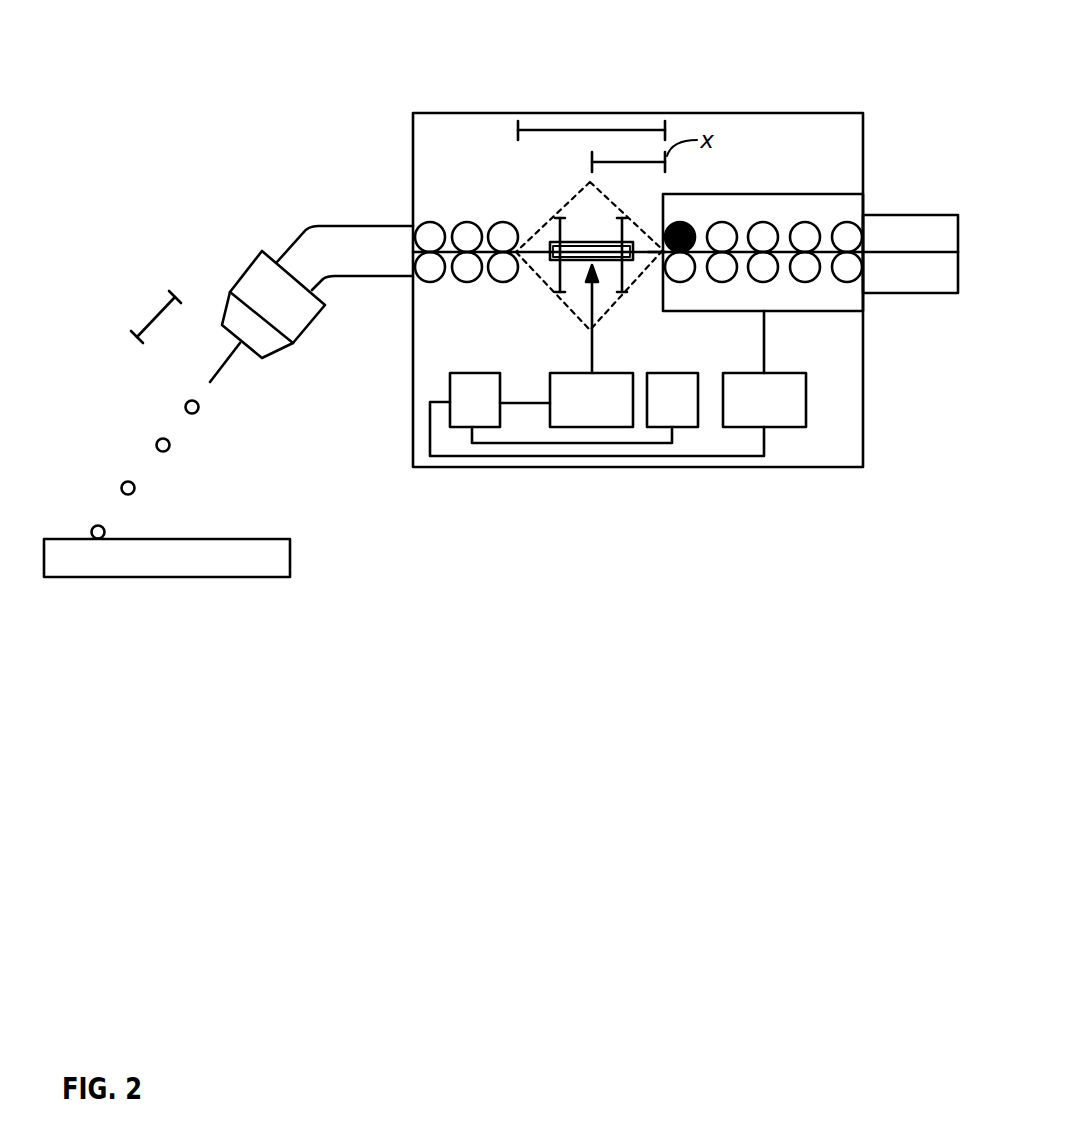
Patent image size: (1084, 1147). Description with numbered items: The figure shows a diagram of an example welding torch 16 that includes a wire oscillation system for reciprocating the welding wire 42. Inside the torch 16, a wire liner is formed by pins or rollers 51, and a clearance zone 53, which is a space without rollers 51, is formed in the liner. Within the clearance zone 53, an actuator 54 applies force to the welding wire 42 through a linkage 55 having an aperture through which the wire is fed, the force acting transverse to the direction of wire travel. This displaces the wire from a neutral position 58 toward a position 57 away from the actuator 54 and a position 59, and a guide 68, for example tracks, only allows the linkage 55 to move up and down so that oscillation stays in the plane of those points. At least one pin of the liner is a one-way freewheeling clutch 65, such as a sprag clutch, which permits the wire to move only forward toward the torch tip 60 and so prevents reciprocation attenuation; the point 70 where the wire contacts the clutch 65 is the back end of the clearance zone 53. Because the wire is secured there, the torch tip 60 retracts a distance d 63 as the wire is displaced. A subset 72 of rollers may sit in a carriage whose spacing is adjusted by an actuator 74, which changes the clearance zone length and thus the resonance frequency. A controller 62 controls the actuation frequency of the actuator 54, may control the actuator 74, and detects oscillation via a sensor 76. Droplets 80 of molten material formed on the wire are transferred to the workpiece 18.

The welding torch 16 is at (864, 112).
The workpiece 18 is at (290, 560).
The welding wire 42 is at (538, 250).
The rollers 51 is at (452, 222).
The clearance zone 53 is at (592, 128).
The actuator 54 is at (550, 373).
The linkage 55 is at (615, 260).
The position 57 is at (590, 182).
The neutral position 58 is at (590, 250).
The position 59 is at (588, 330).
The torch tip 60 is at (218, 372).
The controller 62 is at (468, 373).
The distance d 63 is at (148, 323).
The freewheeling clutch 65 is at (690, 228).
The guide 68 is at (558, 273).
The point 70 is at (662, 243).
The subset of rollers 72 is at (845, 193).
The actuator 74 is at (797, 373).
The sensor 76 is at (694, 373).
The droplets 80 is at (170, 448).